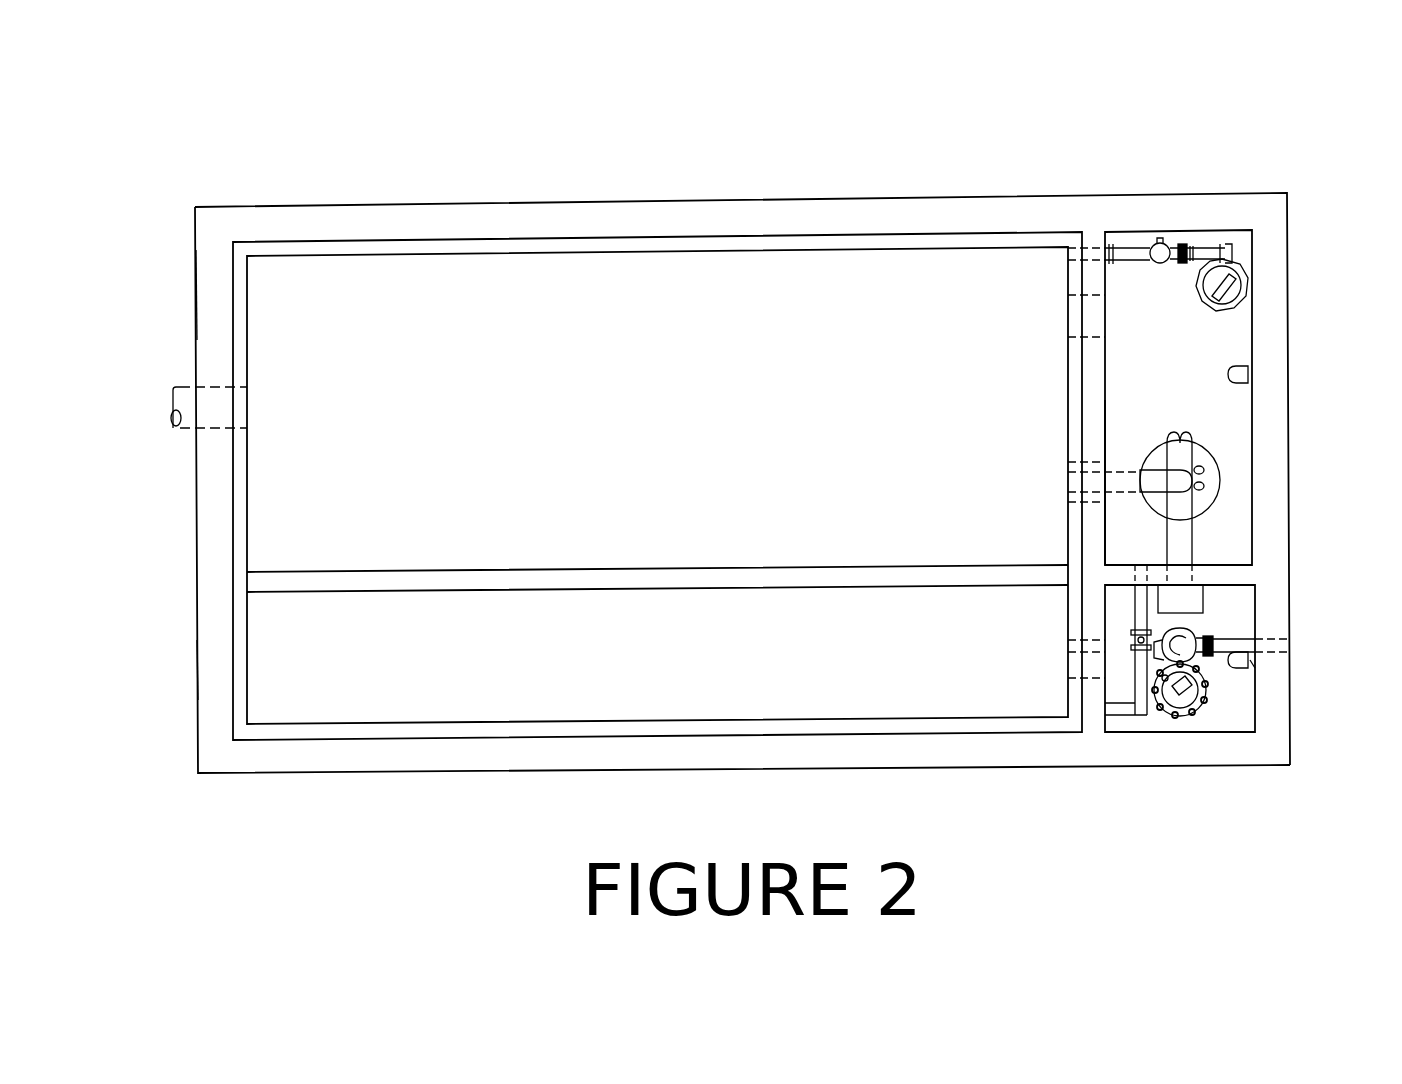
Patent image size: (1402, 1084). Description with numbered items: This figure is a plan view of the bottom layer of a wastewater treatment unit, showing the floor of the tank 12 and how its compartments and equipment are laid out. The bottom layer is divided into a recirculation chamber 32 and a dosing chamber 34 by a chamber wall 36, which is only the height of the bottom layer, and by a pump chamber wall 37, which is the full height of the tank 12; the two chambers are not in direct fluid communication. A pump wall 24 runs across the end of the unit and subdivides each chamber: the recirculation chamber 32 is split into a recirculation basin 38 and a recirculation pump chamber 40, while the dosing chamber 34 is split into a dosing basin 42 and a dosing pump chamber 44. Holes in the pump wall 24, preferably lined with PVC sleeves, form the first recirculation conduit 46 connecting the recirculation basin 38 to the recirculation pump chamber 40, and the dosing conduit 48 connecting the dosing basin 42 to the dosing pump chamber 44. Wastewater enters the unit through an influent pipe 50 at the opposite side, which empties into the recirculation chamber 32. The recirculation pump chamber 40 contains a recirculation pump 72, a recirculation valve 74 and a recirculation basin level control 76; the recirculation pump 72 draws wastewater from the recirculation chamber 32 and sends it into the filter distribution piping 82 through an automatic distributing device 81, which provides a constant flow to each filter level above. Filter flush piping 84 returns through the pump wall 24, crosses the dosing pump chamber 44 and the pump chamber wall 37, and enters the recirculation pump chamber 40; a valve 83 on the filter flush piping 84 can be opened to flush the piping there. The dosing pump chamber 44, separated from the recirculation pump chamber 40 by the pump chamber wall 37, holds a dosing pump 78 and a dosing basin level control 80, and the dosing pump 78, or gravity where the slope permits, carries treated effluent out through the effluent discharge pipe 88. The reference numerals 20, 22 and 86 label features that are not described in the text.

The tank 12 is at (483, 773).
The modular pool system 20 is at (1200, 177).
The outer housing frame 22 is at (647, 203).
The pump wall 24 is at (1105, 442).
The recirculation chamber 32 is at (185, 335).
The dosing chamber 34 is at (178, 688).
The chamber wall 36 is at (650, 572).
The pump chamber wall 37 is at (1207, 590).
The recirculation basin 38 is at (672, 419).
The recirculation pump chamber 40 is at (1187, 357).
The dosing basin 42 is at (672, 673).
The dosing pump chamber 44 is at (1244, 721).
The first recirculation conduit 46 is at (1068, 315).
The dosing conduit 48 is at (1068, 657).
The influent pipe 50 is at (170, 430).
The recirculation pump 72 is at (1245, 302).
The recirculation valve 74 is at (1203, 470).
The recirculation basin level control 76 is at (1250, 378).
The dosing pump 78 is at (1190, 714).
The dosing basin level control 80 is at (1255, 673).
The automatic distributing device 81 is at (1158, 243).
The filter distribution piping 82 is at (1116, 245).
The valve 83 is at (1134, 648).
The filter flush piping 84 is at (1141, 712).
The supply pipe 86 is at (1112, 480).
The effluent discharge pipe 88 is at (1270, 655).